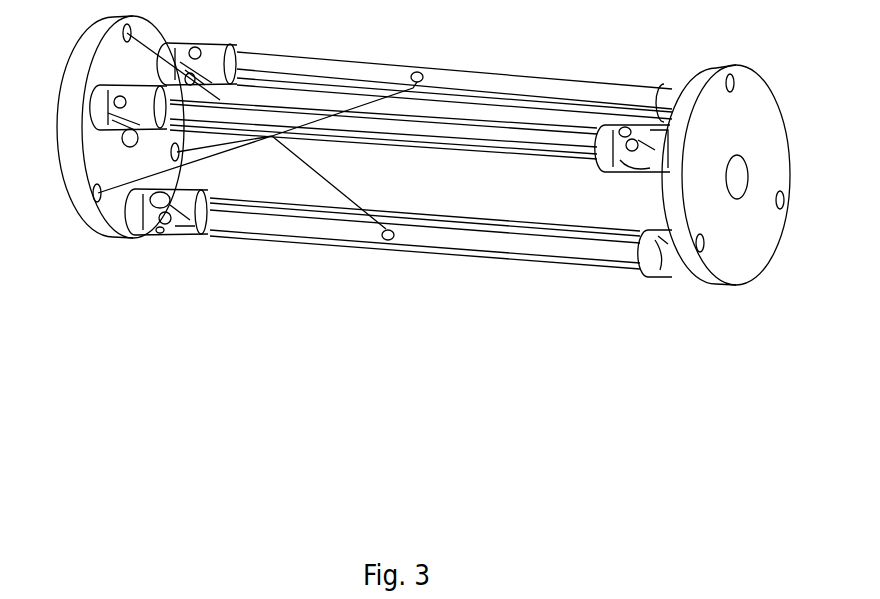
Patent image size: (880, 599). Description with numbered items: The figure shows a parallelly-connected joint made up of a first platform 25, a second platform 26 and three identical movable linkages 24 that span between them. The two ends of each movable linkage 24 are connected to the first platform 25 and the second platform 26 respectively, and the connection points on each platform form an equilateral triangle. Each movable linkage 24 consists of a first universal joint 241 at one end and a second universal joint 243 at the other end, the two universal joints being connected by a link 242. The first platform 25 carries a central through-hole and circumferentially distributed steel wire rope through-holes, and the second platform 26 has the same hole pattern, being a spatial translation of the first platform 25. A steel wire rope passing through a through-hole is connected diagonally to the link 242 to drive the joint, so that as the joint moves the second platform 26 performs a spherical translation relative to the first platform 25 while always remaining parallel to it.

The movable linkage 24 is at (381, 281).
The first universal joint 241 is at (180, 195).
The link 242 is at (342, 232).
The second universal joint 243 is at (617, 259).
The first platform 25 is at (93, 155).
The second platform 26 is at (730, 257).